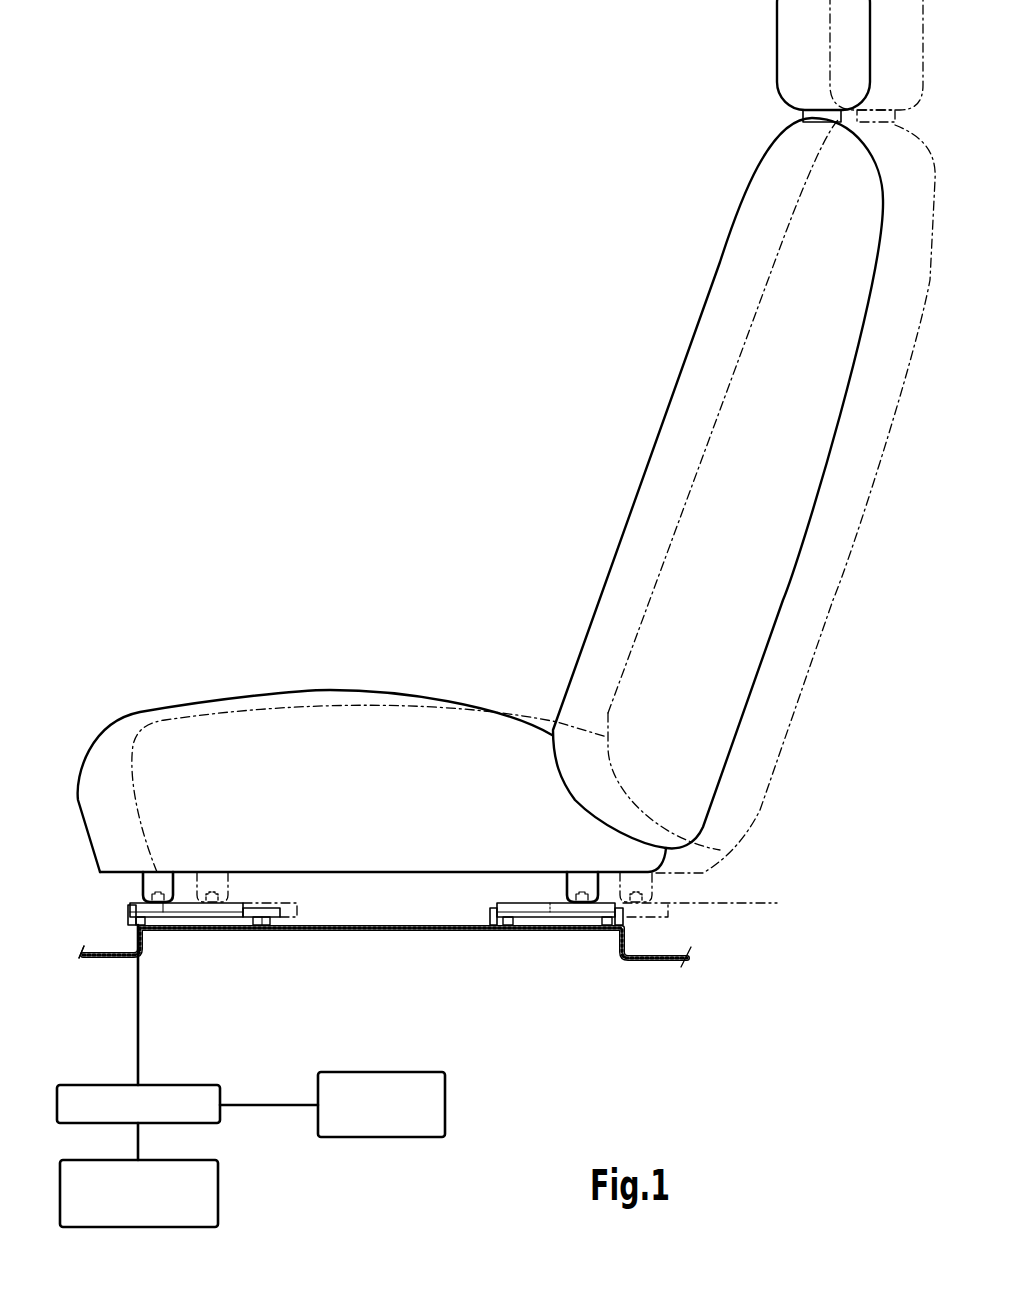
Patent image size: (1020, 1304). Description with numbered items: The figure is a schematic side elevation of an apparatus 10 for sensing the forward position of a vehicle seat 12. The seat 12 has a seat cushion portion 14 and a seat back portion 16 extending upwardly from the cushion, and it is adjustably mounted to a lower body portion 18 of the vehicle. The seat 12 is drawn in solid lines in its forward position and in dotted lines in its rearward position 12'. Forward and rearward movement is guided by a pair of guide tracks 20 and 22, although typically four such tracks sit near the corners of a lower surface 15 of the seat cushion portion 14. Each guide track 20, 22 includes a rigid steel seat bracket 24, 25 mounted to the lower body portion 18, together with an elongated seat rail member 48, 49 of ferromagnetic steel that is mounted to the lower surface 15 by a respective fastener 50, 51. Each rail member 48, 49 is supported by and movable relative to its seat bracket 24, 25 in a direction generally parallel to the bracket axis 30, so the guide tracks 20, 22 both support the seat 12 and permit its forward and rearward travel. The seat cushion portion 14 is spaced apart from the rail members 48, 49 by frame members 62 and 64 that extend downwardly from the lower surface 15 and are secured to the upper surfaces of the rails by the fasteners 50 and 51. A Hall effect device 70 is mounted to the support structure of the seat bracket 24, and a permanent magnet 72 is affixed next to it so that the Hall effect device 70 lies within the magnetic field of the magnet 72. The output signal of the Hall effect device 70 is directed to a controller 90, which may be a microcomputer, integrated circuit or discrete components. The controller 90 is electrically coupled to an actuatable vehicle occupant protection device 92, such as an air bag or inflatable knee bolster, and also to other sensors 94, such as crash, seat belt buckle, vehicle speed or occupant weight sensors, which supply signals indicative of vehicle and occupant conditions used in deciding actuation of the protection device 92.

The apparatus 10 is at (112, 938).
The vehicle seat 12 is at (718, 424).
The rearward position of the seat 12' is at (539, 436).
The seat cushion portion 14 is at (372, 801).
The lower surface 15 is at (322, 872).
The seat back portion 16 is at (696, 457).
The lower body portion 18 is at (372, 967).
The guide track 20 is at (177, 931).
The guide track 22 is at (524, 852).
The seat bracket 24 is at (282, 912).
The seat bracket 25 is at (630, 920).
The bracket axis 30 is at (743, 904).
The seat rail member 48 is at (183, 978).
The seat rail member 49 is at (512, 903).
The fastener 50 is at (157, 893).
The fastener 51 is at (585, 890).
The frame member 62 is at (134, 839).
The frame member 64 is at (547, 841).
The Hall effect device 70 is at (128, 913).
The permanent magnet 72 is at (160, 918).
The controller 90 is at (167, 1088).
The vehicle occupant protection device 92 is at (202, 1203).
The other sensors 94 is at (365, 1073).